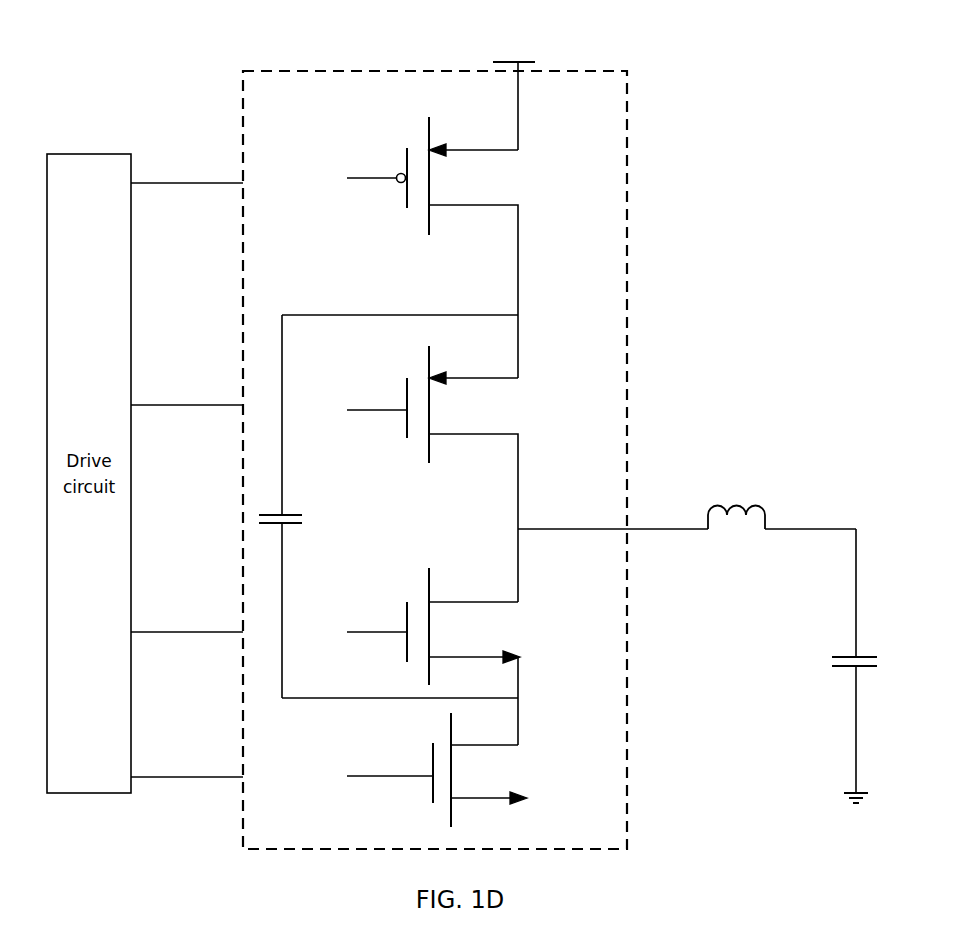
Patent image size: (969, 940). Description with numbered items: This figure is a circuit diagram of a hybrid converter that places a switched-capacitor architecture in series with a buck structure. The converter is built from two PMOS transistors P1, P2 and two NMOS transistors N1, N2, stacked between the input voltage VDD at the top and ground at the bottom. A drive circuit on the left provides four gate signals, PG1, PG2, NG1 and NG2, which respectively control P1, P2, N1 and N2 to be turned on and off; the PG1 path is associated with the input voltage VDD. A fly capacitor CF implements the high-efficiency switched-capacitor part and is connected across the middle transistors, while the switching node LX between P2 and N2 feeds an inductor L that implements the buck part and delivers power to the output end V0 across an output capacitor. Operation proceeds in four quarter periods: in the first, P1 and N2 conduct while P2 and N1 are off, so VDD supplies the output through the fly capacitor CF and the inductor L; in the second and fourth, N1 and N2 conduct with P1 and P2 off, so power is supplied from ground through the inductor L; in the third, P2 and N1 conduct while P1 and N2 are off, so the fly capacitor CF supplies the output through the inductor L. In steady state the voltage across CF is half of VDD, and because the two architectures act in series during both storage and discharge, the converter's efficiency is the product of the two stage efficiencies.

The input voltage VDD is at (512, 90).
The first PMOS P1 is at (493, 216).
The second PMOS P2 is at (493, 474).
The second NMOS N2 is at (495, 656).
The first NMOS N1 is at (508, 770).
The PG1 control signal PG1 is at (268, 165).
The PG2 control signal PG2 is at (269, 394).
The NG1 control signal NG1 is at (282, 755).
The NG2 control signal NG2 is at (269, 614).
The fly capacitor CF is at (295, 501).
The switching node LX is at (613, 513).
The inductor L is at (736, 497).
The output voltage V0 is at (821, 652).